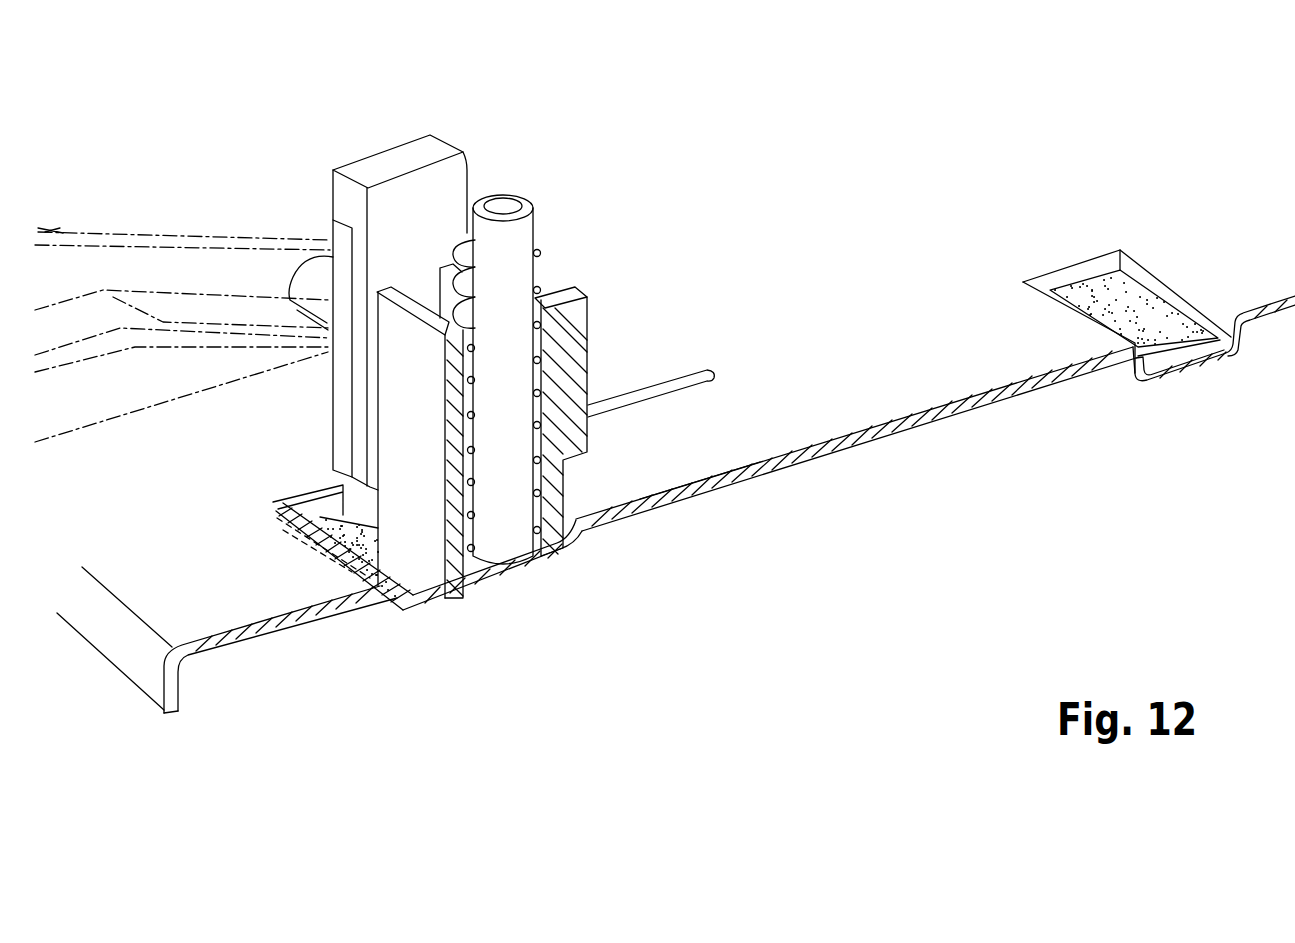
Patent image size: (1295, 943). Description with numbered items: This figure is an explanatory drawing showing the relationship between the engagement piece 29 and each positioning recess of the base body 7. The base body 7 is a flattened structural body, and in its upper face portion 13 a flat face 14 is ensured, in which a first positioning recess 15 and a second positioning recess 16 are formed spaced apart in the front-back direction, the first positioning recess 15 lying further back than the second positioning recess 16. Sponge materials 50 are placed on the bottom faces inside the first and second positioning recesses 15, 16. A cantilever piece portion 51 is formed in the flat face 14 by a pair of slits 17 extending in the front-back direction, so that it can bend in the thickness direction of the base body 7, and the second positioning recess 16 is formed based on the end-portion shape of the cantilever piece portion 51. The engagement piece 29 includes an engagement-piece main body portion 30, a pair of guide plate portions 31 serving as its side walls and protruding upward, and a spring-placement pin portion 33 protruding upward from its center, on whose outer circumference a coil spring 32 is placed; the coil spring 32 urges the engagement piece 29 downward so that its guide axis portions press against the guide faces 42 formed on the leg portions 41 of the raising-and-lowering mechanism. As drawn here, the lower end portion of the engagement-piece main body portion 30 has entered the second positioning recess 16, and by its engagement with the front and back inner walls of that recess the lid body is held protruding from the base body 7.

The base body 7 is at (913, 377).
The upper face portion 13 is at (676, 504).
The flat face 14 is at (676, 504).
The first positioning recess 15 is at (1173, 293).
The second positioning recess 16 is at (430, 603).
The slits 17 is at (657, 380).
The engagement piece 29 is at (514, 158).
The engagement-piece main body portion 30 is at (407, 512).
The guide plate portions 31 is at (383, 158).
The coil spring 32 is at (540, 247).
The spring-placement pin portion 33 is at (517, 237).
The leg portions 41 is at (173, 258).
The guide faces 42 is at (220, 313).
The sponge materials 50 is at (357, 577).
The cantilever piece portion 51 is at (698, 437).